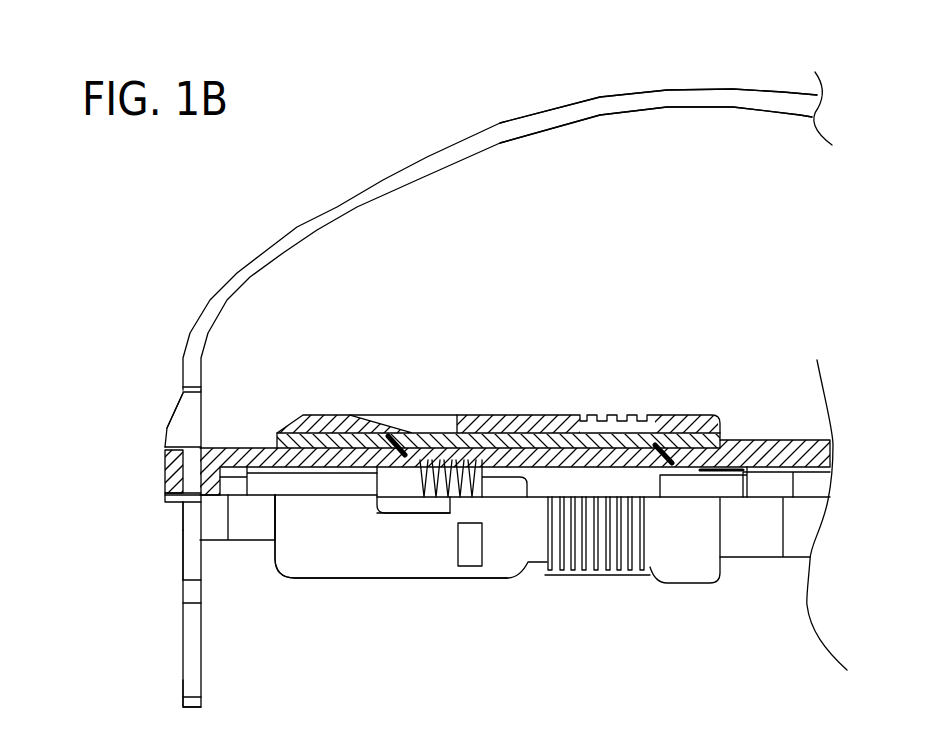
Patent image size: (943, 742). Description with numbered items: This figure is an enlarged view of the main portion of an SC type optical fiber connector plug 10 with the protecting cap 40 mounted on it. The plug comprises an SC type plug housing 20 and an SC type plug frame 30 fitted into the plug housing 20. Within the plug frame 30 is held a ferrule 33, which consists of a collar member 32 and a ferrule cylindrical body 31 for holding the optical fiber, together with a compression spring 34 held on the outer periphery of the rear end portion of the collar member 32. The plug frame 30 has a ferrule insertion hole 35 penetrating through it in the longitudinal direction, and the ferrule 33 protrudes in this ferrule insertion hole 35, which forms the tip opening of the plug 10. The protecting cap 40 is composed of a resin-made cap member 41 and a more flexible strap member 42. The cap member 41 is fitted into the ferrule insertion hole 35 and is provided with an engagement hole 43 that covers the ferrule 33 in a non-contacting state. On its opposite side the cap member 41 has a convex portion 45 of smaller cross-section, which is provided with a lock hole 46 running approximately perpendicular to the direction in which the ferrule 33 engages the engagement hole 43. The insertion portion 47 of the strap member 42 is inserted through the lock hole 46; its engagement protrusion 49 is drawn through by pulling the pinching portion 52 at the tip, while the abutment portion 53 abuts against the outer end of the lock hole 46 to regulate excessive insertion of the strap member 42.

The SC type optical fiber connector plug 10 is at (567, 627).
The SC type plug housing 20 is at (317, 417).
The SC type plug frame 30 is at (392, 434).
The ferrule cylindrical body 31 is at (323, 490).
The collar member 32 is at (397, 487).
The ferrule 33 is at (445, 668).
The compression spring 34 is at (452, 487).
The ferrule insertion hole 35 is at (268, 446).
The protecting cap 40 is at (128, 310).
The cap member 41 is at (237, 530).
The strap member 42 is at (415, 168).
The engagement hole 43 is at (222, 448).
The convex portion 45 is at (167, 470).
The lock hole 46 is at (160, 440).
The insertion portion 47 is at (187, 560).
The engagement protrusion 49 is at (177, 517).
The pinching portion 52 is at (190, 680).
The abutment portion 53 is at (167, 430).